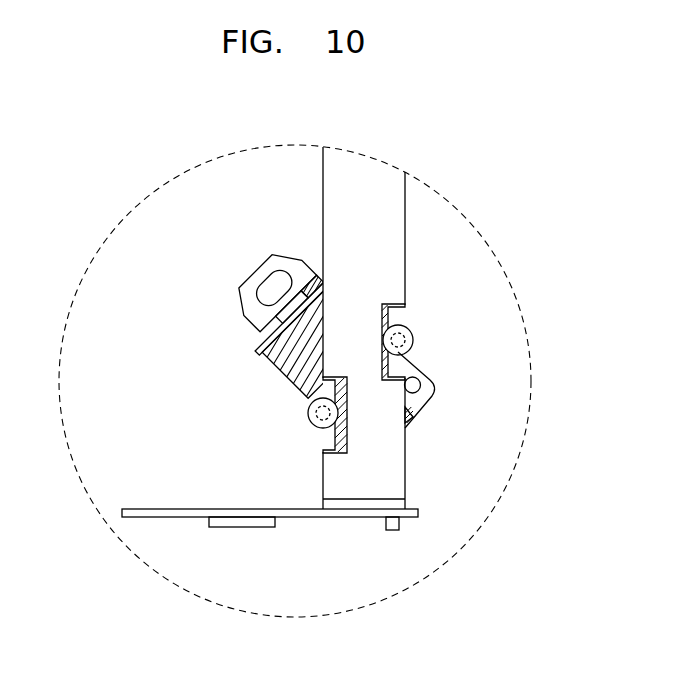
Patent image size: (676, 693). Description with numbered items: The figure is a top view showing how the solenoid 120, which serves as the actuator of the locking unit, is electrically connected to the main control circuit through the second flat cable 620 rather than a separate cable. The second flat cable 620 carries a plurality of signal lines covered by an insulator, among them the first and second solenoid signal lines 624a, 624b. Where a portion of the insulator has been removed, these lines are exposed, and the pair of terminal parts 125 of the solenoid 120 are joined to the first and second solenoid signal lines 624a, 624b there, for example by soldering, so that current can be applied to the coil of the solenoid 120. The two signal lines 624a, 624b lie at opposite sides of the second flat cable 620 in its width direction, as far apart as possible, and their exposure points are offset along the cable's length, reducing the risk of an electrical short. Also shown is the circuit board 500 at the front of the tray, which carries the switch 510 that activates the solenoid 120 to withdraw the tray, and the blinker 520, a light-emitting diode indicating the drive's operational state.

The second flat cable 620 is at (328, 223).
The solenoid 120 is at (237, 338).
The first solenoid signal line 624a is at (333, 383).
The second solenoid signal line 624b is at (392, 313).
The terminal parts 125 is at (321, 414).
The circuit board 500 is at (418, 513).
The switch 510 is at (243, 527).
The blinker 520 is at (393, 530).